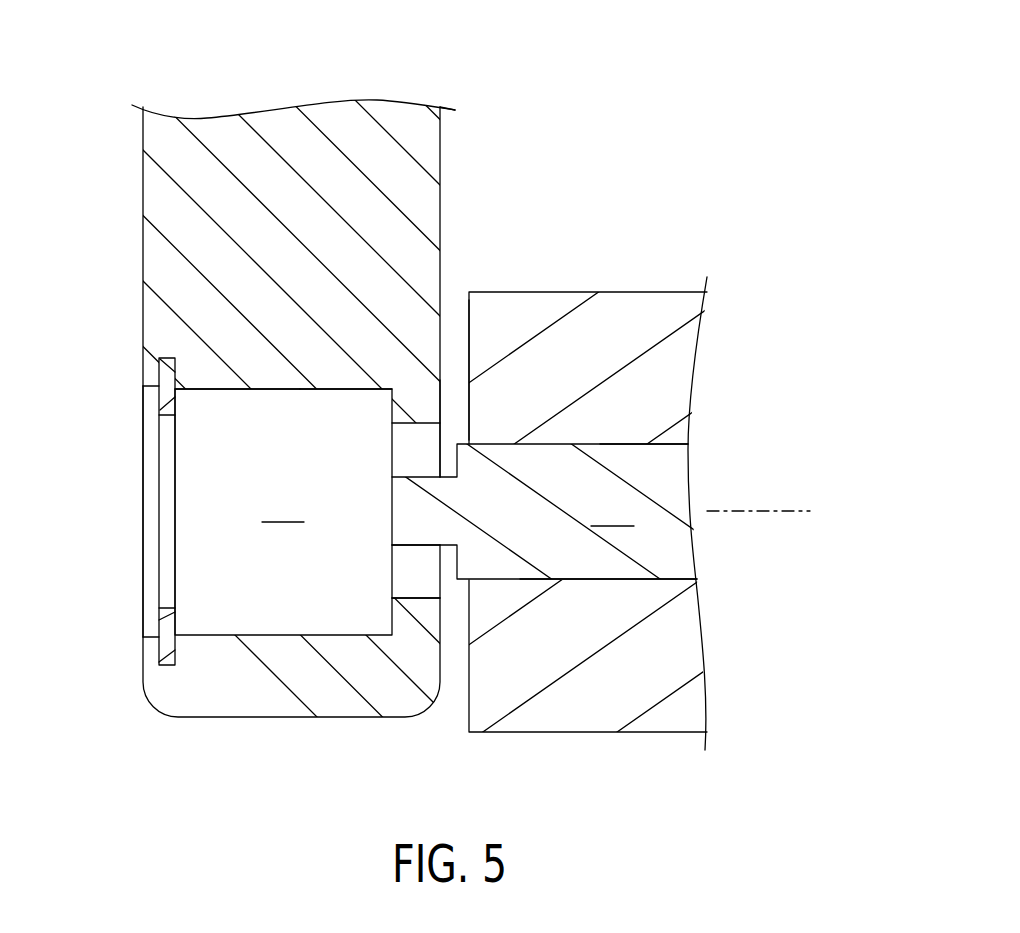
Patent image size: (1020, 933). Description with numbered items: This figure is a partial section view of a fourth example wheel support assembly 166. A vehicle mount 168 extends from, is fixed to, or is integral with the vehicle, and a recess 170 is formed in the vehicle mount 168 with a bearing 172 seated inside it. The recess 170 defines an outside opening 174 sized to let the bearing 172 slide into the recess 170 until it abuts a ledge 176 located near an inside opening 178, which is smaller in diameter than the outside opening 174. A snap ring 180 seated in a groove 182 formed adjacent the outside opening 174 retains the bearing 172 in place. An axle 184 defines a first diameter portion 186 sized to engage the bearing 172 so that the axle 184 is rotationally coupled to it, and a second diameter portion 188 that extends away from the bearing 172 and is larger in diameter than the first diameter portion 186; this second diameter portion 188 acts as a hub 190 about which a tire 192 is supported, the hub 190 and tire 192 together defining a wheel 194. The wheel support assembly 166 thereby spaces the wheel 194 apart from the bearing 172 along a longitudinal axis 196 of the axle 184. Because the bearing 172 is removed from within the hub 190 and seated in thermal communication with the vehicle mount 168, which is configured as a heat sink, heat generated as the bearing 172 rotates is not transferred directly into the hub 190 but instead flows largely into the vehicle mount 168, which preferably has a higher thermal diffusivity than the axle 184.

The wheel support assembly 166 is at (637, 58).
The vehicle mount 168 is at (143, 143).
The recess 170 is at (247, 388).
The bearing 172 is at (283, 512).
The outside opening 174 is at (143, 605).
The ledge 176 is at (379, 392).
The inside opening 178 is at (446, 440).
The snap ring 180 is at (159, 400).
The groove 182 is at (158, 366).
The axle 184 is at (623, 585).
The first diameter portion 186 is at (412, 547).
The second diameter portion 188 is at (684, 480).
The hub 190 is at (550, 503).
The tire 192 is at (648, 291).
The wheel 194 is at (575, 266).
The longitudinal axis 196 is at (769, 510).